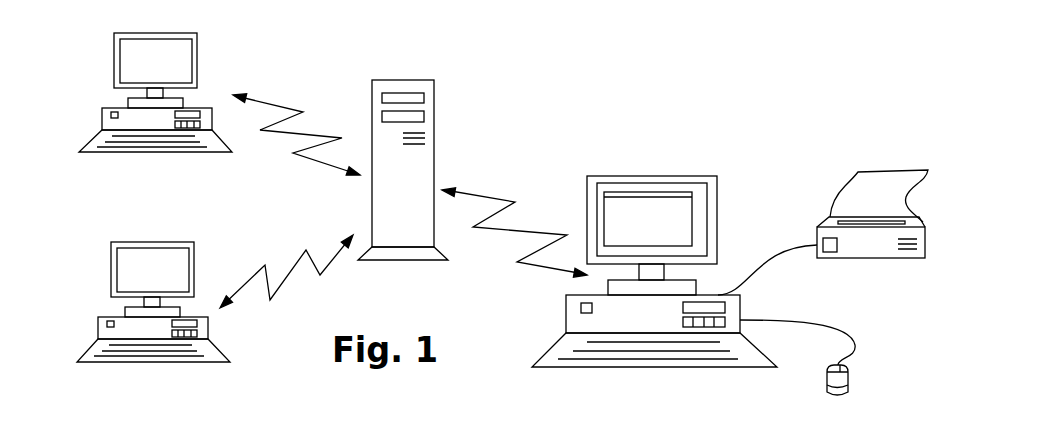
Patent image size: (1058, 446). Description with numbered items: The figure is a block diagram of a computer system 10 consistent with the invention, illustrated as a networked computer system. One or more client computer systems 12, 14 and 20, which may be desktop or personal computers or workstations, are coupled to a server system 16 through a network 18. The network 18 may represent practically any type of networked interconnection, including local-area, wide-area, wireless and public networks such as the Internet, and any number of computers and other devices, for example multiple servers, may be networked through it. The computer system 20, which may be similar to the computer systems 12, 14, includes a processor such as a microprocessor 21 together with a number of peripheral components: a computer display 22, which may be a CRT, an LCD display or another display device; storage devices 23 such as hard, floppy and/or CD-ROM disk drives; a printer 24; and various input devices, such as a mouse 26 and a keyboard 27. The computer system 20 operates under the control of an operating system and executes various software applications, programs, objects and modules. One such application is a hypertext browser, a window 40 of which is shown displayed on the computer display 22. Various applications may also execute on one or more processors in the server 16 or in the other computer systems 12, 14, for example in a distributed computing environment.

The computer system 10 is at (575, 85).
The client computer system 12 is at (117, 50).
The client computer system 14 is at (113, 247).
The server system 16 is at (392, 80).
The network 18 is at (293, 153).
The computer system 20 is at (640, 267).
The microprocessor 21 is at (653, 359).
The computer display 22 is at (652, 213).
The storage devices 23 is at (700, 327).
The printer 24 is at (833, 224).
The mouse 26 is at (845, 385).
The keyboard 27 is at (552, 365).
The window 40 is at (645, 210).